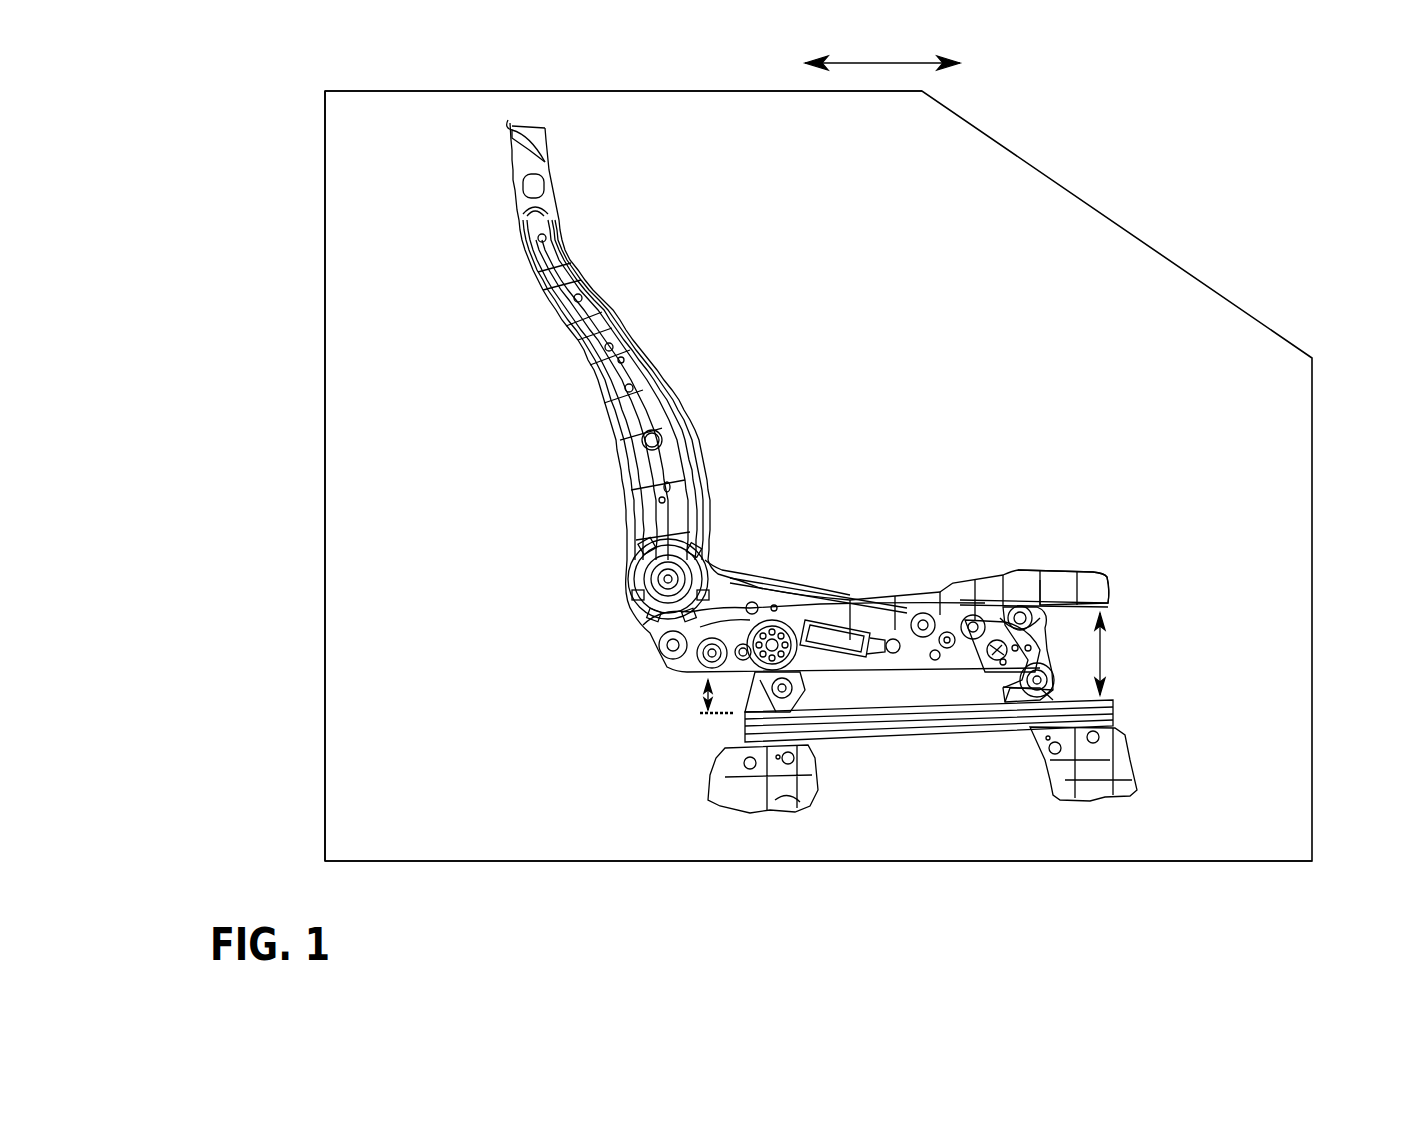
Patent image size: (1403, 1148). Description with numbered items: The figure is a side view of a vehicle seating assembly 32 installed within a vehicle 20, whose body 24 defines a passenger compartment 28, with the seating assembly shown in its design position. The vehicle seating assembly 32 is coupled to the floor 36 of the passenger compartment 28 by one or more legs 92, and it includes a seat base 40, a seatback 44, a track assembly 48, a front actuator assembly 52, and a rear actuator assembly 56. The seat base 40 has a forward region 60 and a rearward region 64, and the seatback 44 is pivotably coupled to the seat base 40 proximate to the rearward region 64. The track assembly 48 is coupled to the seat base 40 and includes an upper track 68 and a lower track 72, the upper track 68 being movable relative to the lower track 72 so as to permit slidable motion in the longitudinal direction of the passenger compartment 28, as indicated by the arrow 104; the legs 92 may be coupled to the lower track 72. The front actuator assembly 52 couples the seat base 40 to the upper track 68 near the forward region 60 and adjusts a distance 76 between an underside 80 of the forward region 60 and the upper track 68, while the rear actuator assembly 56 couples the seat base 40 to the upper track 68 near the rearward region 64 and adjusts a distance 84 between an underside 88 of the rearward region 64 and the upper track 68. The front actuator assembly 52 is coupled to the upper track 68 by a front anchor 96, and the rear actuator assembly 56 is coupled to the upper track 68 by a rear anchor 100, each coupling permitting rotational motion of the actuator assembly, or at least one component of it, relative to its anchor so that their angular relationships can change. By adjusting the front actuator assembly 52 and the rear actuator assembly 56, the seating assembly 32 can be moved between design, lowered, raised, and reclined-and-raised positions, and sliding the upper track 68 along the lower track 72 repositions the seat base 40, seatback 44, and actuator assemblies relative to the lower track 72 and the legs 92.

The vehicle 20 is at (1038, 165).
The body 24 is at (393, 90).
The passenger compartment 28 is at (353, 170).
The vehicle seating assembly 32 is at (640, 347).
The floor 36 is at (1177, 800).
The seat base 40 is at (913, 592).
The seatback 44 is at (688, 399).
The track assembly 48 is at (915, 742).
The front actuator assembly 52 is at (1042, 638).
The rear actuator assembly 56 is at (787, 600).
The forward region 60 is at (1108, 585).
The rearward region 64 is at (659, 640).
The upper track 68 is at (977, 800).
The lower track 72 is at (975, 743).
The distance 76 is at (1102, 650).
The underside 80 is at (1093, 588).
The distance 84 is at (703, 688).
The underside 88 is at (687, 675).
The legs 92 is at (787, 812).
The front anchor 96 is at (1013, 700).
The rear anchor 100 is at (747, 707).
The arrow 104 is at (910, 63).